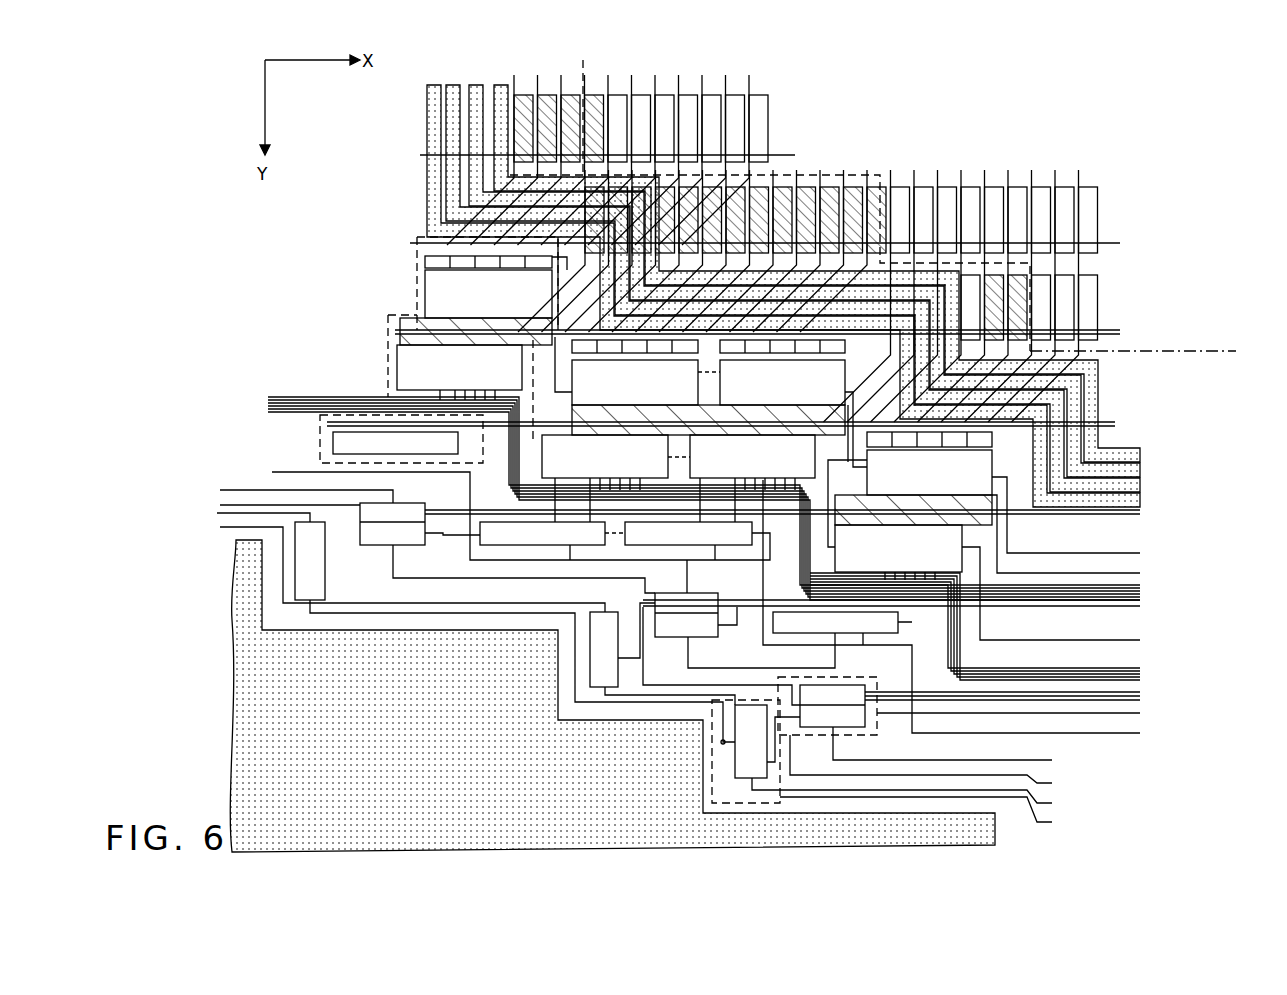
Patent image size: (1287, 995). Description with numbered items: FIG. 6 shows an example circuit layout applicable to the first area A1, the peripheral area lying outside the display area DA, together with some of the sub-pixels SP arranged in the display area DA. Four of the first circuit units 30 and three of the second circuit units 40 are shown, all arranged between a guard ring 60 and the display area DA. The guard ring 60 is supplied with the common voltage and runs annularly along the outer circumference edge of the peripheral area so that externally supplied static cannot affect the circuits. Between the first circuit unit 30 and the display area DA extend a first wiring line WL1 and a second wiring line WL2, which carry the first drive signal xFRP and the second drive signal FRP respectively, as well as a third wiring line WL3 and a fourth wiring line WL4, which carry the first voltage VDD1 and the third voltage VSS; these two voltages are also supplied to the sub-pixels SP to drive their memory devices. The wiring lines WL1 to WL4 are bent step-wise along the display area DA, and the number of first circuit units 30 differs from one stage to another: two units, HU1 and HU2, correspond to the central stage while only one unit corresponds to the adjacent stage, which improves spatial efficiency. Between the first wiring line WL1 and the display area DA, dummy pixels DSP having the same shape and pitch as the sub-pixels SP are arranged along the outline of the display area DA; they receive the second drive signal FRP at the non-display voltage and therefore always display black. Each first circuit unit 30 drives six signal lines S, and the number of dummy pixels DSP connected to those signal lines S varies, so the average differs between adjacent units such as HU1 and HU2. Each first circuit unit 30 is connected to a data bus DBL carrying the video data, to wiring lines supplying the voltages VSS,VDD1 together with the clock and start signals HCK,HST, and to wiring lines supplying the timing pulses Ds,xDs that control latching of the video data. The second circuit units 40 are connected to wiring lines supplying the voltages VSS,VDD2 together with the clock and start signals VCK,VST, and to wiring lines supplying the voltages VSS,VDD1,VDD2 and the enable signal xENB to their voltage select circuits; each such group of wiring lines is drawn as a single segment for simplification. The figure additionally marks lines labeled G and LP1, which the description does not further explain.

The first circuit unit 30 is at (418, 240).
The second circuit unit 40 is at (712, 758).
The guard ring 60 is at (242, 583).
The first wiring line WL1 is at (478, 93).
The second wiring line WL2 is at (497, 110).
The third wiring line WL3 is at (452, 127).
The fourth wiring line WL4 is at (432, 146).
The signal line S is at (515, 88).
The dummy pixel DSP is at (533, 97).
The sub-pixel SP is at (770, 98).
The first area A1 is at (1255, 418).
The display area DA is at (1255, 310).
The timing pulses Ds,xDs is at (425, 302).
The gate line G is at (759, 425).
The VRAM line LP1 is at (1035, 388).
The second drive signal FRP is at (1162, 456).
The first drive signal xFRP is at (1167, 472).
The first voltage VDD1 is at (1170, 488).
The third voltage VSS is at (802, 510).
The voltage supply wiring lines VSS,VDD1 is at (425, 281).
The data bus DBL is at (684, 497).
The first circuit unit HU1 is at (626, 371).
The first circuit unit HU2 is at (782, 403).
The clock signal and start signal HCK,HST is at (479, 511).
The voltage supply wiring lines VSS,VDD1,VDD2 is at (1015, 748).
The enable signal xENB is at (946, 763).
The voltage supply wiring lines VSS,VDD2 is at (948, 795).
The clock signal and start signal VCK,VST is at (955, 815).